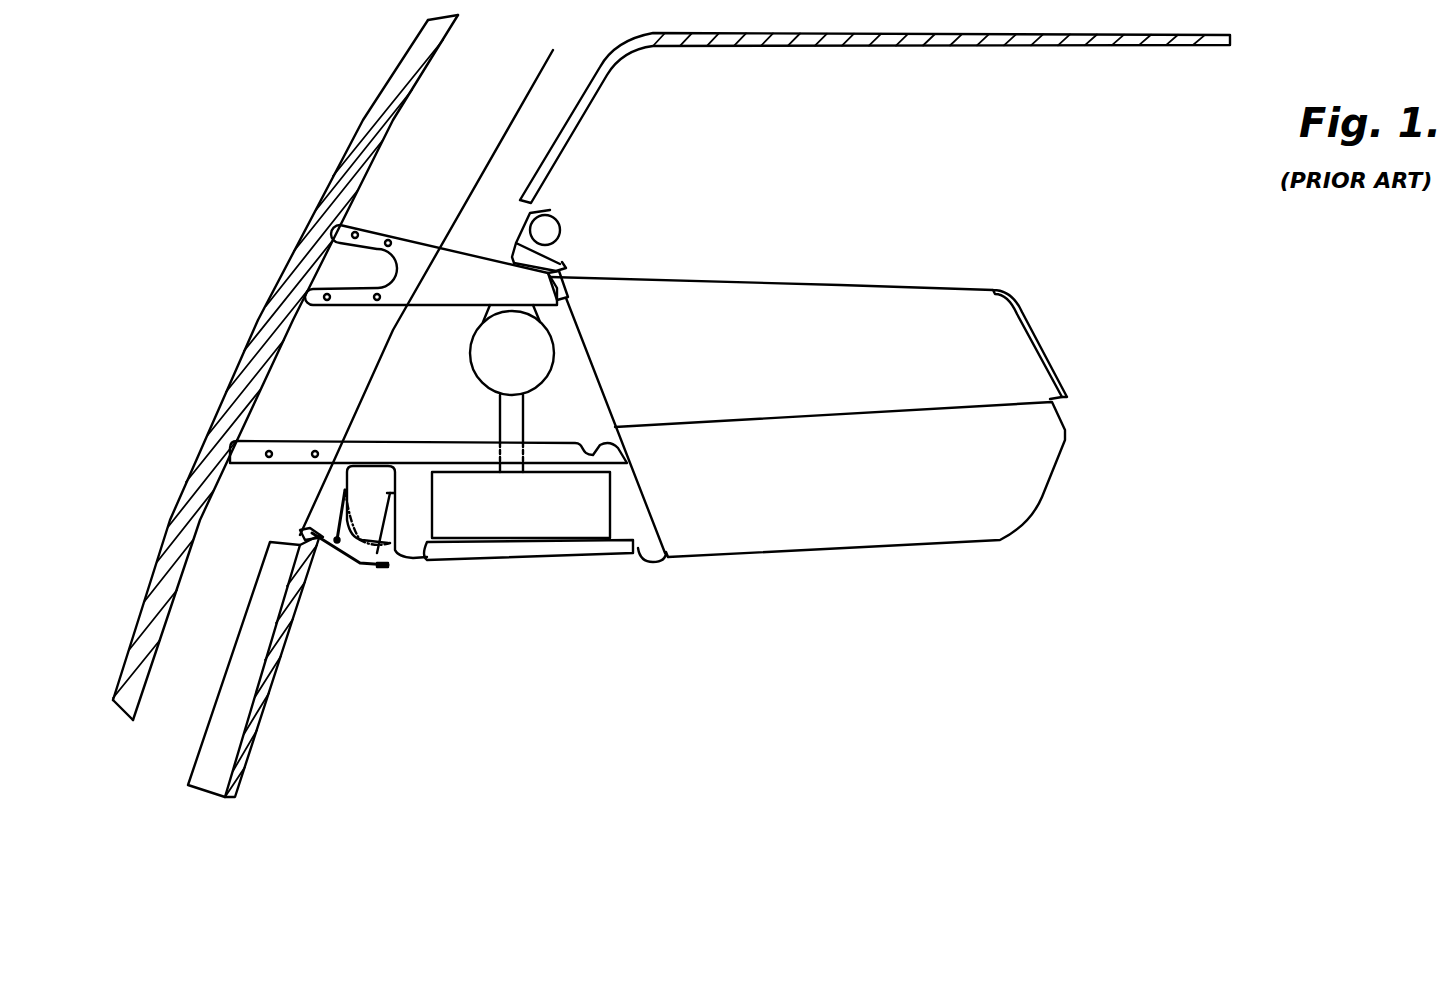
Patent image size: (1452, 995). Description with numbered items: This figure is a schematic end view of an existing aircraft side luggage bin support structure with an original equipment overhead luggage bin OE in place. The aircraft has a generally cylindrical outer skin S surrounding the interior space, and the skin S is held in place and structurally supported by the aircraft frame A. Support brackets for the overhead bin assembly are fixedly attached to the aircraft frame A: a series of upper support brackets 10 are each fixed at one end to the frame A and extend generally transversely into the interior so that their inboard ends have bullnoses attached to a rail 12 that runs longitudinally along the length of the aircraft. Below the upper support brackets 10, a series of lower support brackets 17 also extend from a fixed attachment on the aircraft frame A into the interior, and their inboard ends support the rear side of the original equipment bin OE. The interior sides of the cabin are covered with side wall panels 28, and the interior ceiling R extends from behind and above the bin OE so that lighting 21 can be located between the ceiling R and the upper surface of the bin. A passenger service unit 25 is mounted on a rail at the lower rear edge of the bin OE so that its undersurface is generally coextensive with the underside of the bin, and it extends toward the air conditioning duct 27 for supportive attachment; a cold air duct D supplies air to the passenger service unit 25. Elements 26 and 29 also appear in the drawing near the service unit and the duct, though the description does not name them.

The outer skin S is at (353, 157).
The aircraft frame A is at (297, 383).
The interior ceiling R is at (930, 47).
The original equipment overhead luggage bin OE is at (1042, 298).
The cold air duct D is at (512, 388).
The upper support brackets 10 is at (418, 262).
The rail 12 is at (565, 296).
The lower support brackets 17 is at (372, 448).
The lighting 21 is at (562, 237).
The passenger service unit 25 is at (543, 527).
The retaining hook 26 is at (660, 567).
The air conditioning duct 27 is at (363, 542).
The side wall panels 28 is at (260, 710).
The clip member 29 is at (412, 560).